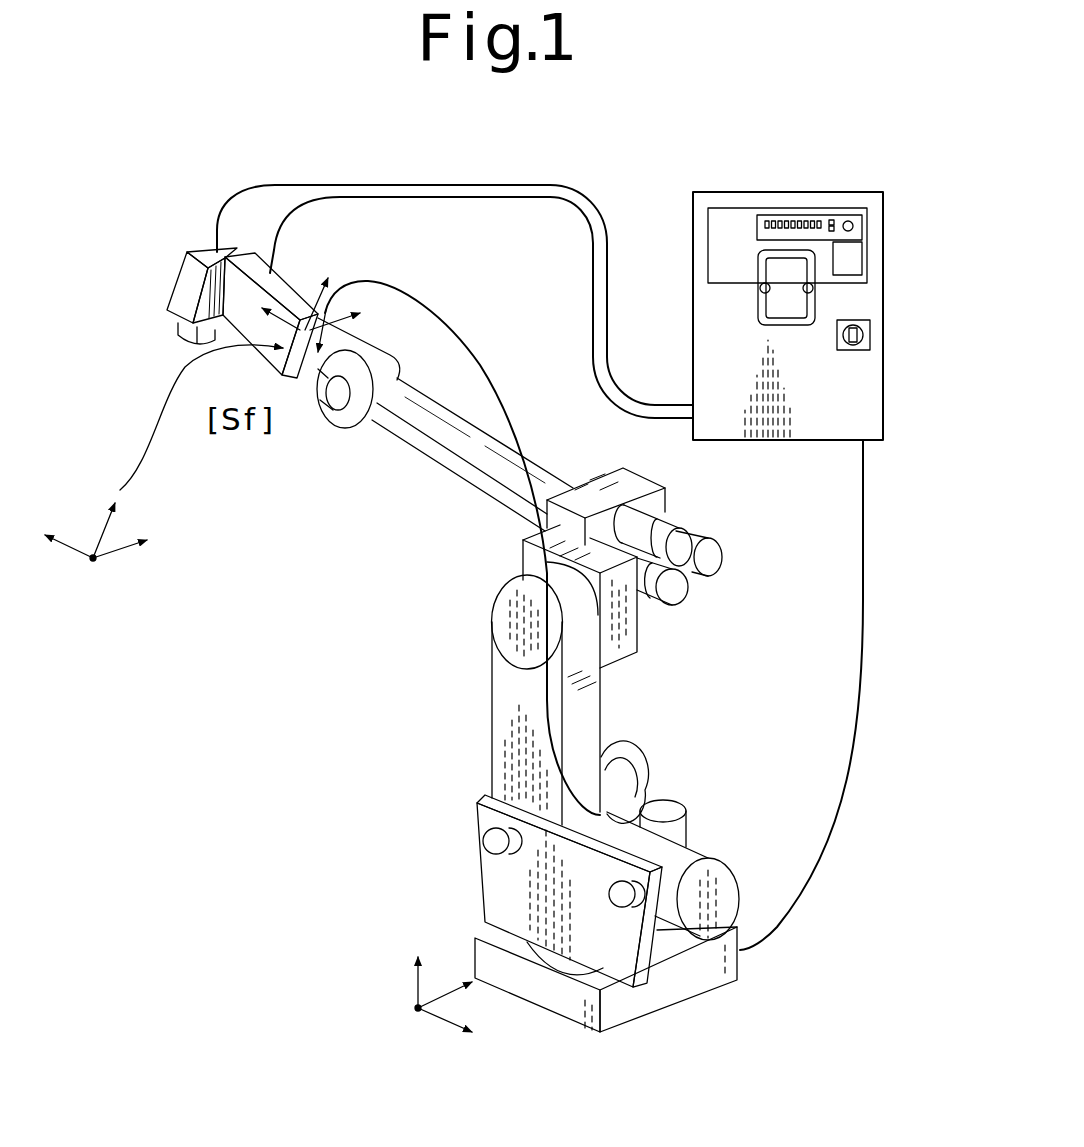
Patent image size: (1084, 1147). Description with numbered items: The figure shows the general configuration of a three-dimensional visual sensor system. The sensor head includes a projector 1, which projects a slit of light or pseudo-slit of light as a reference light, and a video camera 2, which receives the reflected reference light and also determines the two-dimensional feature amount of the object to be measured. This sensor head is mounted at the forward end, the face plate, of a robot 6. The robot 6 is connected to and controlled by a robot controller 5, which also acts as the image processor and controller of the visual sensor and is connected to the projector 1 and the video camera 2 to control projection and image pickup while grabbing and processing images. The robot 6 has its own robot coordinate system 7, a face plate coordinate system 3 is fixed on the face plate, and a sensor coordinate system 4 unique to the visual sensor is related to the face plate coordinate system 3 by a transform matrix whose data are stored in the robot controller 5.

The projector 1 is at (286, 283).
The video camera 2 is at (205, 250).
The face plate coordinate system 3 is at (337, 400).
The sensor coordinate system 4 is at (88, 575).
The robot controller 5 is at (897, 203).
The robot 6 is at (448, 738).
The robot coordinate system 7 is at (392, 1024).